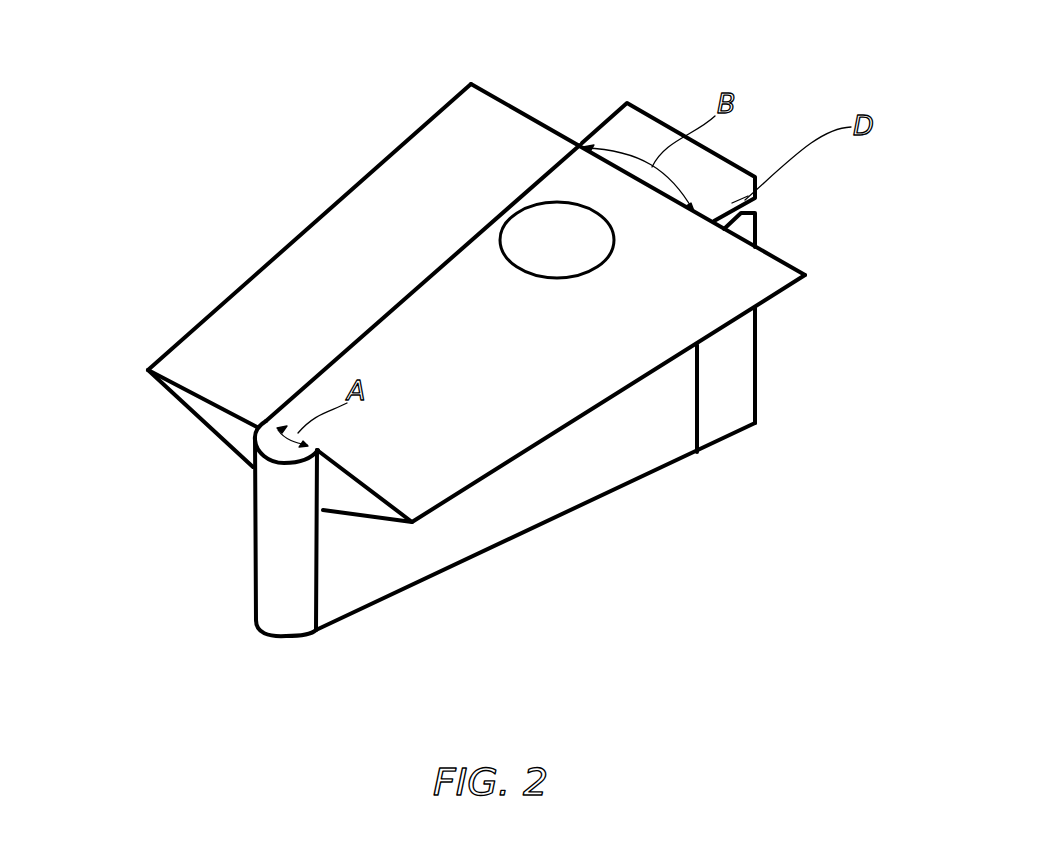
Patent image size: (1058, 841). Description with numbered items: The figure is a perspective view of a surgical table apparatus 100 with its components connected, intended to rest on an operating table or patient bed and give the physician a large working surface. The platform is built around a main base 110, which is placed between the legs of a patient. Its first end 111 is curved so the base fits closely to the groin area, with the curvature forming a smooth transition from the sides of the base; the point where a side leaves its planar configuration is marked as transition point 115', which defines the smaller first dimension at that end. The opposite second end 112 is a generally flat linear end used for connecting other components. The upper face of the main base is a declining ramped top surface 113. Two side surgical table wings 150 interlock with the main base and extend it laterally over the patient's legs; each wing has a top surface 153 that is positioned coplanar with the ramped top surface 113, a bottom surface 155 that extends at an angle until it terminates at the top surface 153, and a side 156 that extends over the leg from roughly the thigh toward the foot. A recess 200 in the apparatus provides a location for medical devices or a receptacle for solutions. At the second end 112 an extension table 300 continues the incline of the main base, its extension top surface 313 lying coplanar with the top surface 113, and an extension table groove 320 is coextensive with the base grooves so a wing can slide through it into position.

The surgical table apparatus 100 is at (894, 191).
The main base 110 is at (431, 401).
The first end 111 is at (275, 557).
The second end 112 is at (638, 178).
The top surface 113 is at (478, 329).
The transition point 115' is at (284, 665).
The side surgical table wing 150 is at (236, 330).
The top surface 153 is at (385, 183).
The bottom surface 155 is at (196, 413).
The side 156 is at (262, 263).
The recess 200 is at (589, 254).
The extension table 300 is at (644, 106).
The extension top surface 313 is at (717, 165).
The extension table groove 320 is at (760, 232).